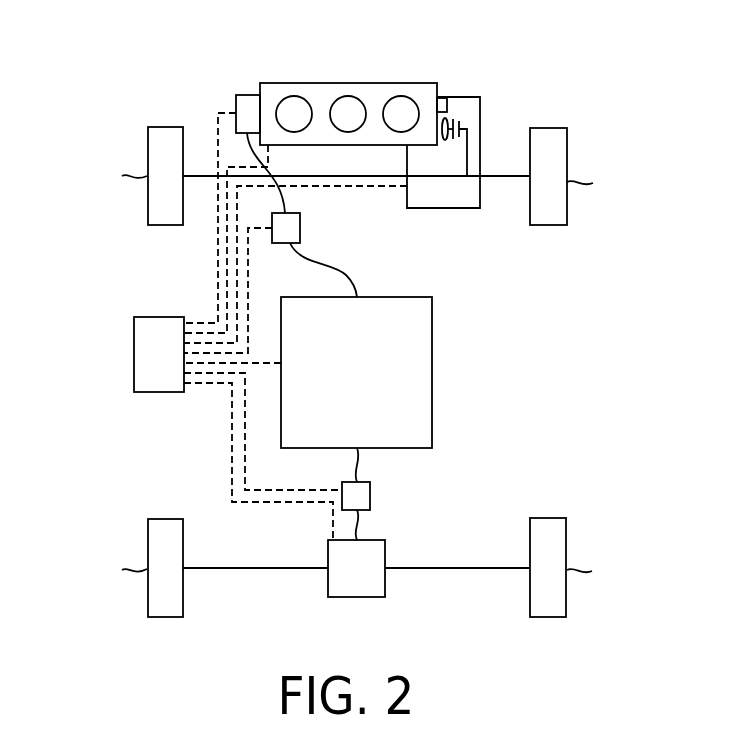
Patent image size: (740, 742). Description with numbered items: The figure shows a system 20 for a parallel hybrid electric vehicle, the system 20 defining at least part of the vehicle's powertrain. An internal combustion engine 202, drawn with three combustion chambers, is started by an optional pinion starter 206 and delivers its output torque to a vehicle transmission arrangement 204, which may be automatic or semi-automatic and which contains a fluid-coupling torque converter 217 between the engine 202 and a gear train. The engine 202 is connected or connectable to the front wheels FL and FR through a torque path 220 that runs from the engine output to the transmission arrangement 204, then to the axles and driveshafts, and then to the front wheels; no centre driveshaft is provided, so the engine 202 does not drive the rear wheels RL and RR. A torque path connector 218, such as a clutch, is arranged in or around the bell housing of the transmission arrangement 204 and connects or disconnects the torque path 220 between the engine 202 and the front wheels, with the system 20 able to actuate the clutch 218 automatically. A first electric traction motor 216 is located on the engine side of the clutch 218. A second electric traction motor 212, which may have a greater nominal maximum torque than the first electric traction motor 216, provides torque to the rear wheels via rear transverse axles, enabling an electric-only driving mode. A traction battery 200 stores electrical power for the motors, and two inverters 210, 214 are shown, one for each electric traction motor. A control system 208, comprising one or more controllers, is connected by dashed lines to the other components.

The system 20 is at (542, 75).
The traction battery 200 is at (433, 370).
The engine 202 is at (311, 83).
The vehicle transmission arrangement 204 is at (448, 210).
The pinion starter 206 is at (443, 97).
The control system 208 is at (133, 358).
The inverter 210 is at (372, 496).
The second electric traction motor 212 is at (357, 598).
The inverter 214 is at (278, 245).
The first electric traction motor 216 is at (246, 95).
The fluid-coupling torque converter 217 is at (450, 121).
The torque path connector 218 is at (463, 126).
The torque path 220 is at (383, 187).